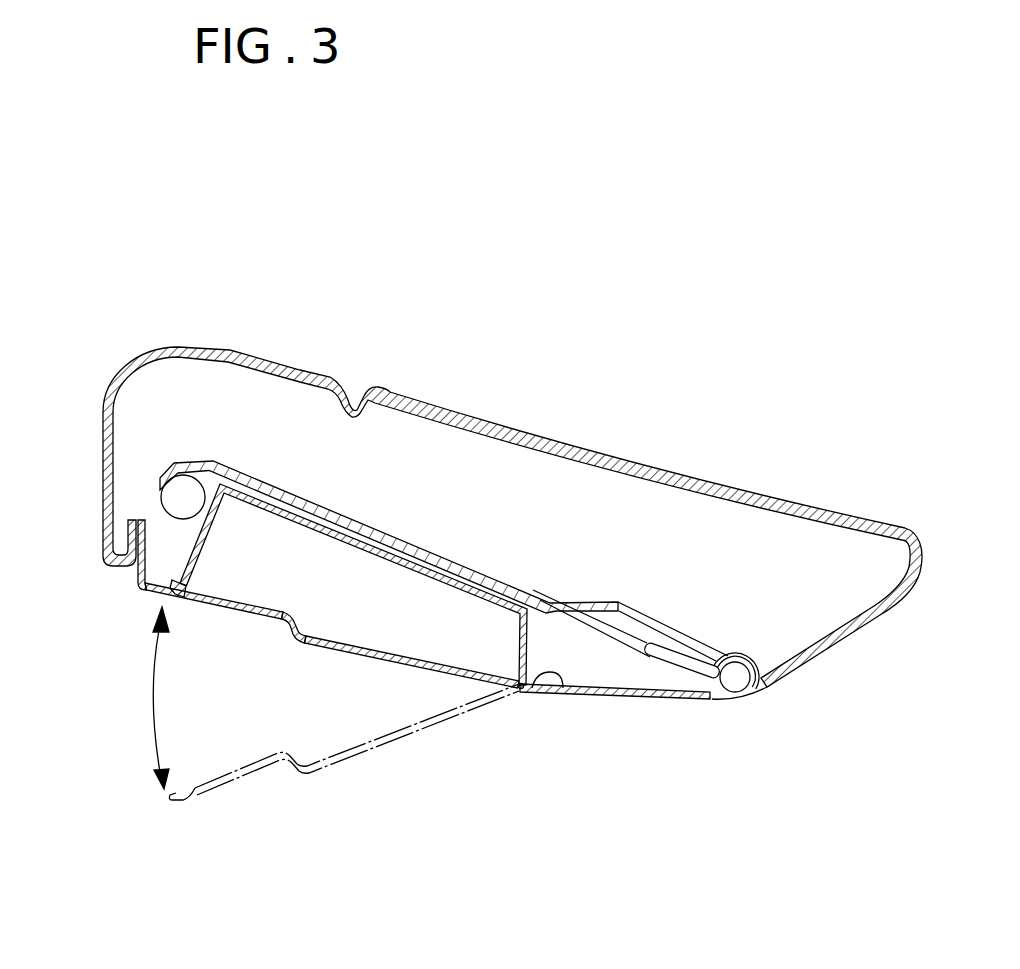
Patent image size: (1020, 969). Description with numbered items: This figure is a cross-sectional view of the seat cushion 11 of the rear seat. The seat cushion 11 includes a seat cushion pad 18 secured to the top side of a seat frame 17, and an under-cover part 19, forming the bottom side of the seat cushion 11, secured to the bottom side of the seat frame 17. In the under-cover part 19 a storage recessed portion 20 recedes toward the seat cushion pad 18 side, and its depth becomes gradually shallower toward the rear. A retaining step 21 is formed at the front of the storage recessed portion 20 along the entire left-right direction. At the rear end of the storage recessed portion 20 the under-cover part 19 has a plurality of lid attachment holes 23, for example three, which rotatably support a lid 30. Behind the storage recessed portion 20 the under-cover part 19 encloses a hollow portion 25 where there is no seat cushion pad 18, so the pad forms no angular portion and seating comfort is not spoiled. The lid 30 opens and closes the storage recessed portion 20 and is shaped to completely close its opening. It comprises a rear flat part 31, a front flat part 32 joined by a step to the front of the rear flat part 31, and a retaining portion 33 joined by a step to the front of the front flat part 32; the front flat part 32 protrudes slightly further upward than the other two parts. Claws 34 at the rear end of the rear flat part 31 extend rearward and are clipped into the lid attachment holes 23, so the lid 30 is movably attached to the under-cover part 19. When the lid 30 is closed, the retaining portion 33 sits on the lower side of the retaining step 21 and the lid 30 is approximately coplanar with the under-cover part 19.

The seat cushion 11 is at (556, 362).
The seat frame 17 is at (710, 640).
The seat cushion pad 18 is at (722, 483).
The under-cover part 19 is at (665, 697).
The storage recessed portion 20 is at (275, 535).
The retaining step 21 is at (136, 563).
The lid attachment holes 23 is at (563, 693).
The hollow portion 25 is at (570, 643).
The lid 30 is at (300, 637).
The rear flat part 31 is at (363, 651).
The front flat part 32 is at (224, 603).
The retaining portion 33 is at (172, 597).
The claws 34 is at (548, 693).